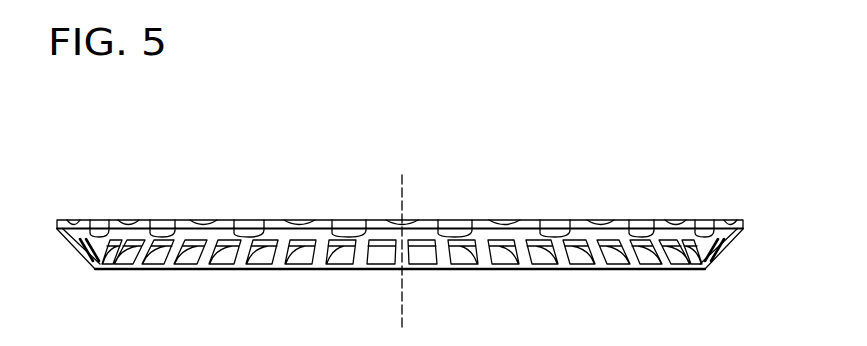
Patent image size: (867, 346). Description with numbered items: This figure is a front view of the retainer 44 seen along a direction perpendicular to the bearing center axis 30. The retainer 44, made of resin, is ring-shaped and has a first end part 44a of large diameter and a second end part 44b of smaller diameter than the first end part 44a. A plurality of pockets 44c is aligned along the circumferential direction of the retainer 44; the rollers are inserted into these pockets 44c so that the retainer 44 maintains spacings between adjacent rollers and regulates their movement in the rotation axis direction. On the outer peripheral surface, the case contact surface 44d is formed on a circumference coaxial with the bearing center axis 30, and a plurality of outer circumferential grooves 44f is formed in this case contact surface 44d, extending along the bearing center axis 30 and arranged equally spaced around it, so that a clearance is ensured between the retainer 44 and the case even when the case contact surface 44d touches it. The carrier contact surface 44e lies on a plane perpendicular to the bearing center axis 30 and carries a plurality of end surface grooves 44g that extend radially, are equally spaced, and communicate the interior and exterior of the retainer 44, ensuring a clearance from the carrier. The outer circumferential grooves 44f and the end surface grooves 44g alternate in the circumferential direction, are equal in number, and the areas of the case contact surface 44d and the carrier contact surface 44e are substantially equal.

The bearing center axis 30 is at (403, 313).
The retainer 44 is at (400, 226).
The first end part 44a is at (687, 163).
The second end part 44b is at (643, 270).
The pockets 44c is at (573, 250).
The case contact surface 44d is at (635, 223).
The carrier contact surface 44e is at (630, 220).
The outer circumferential grooves 44f is at (557, 231).
The end surface grooves 44g is at (503, 220).